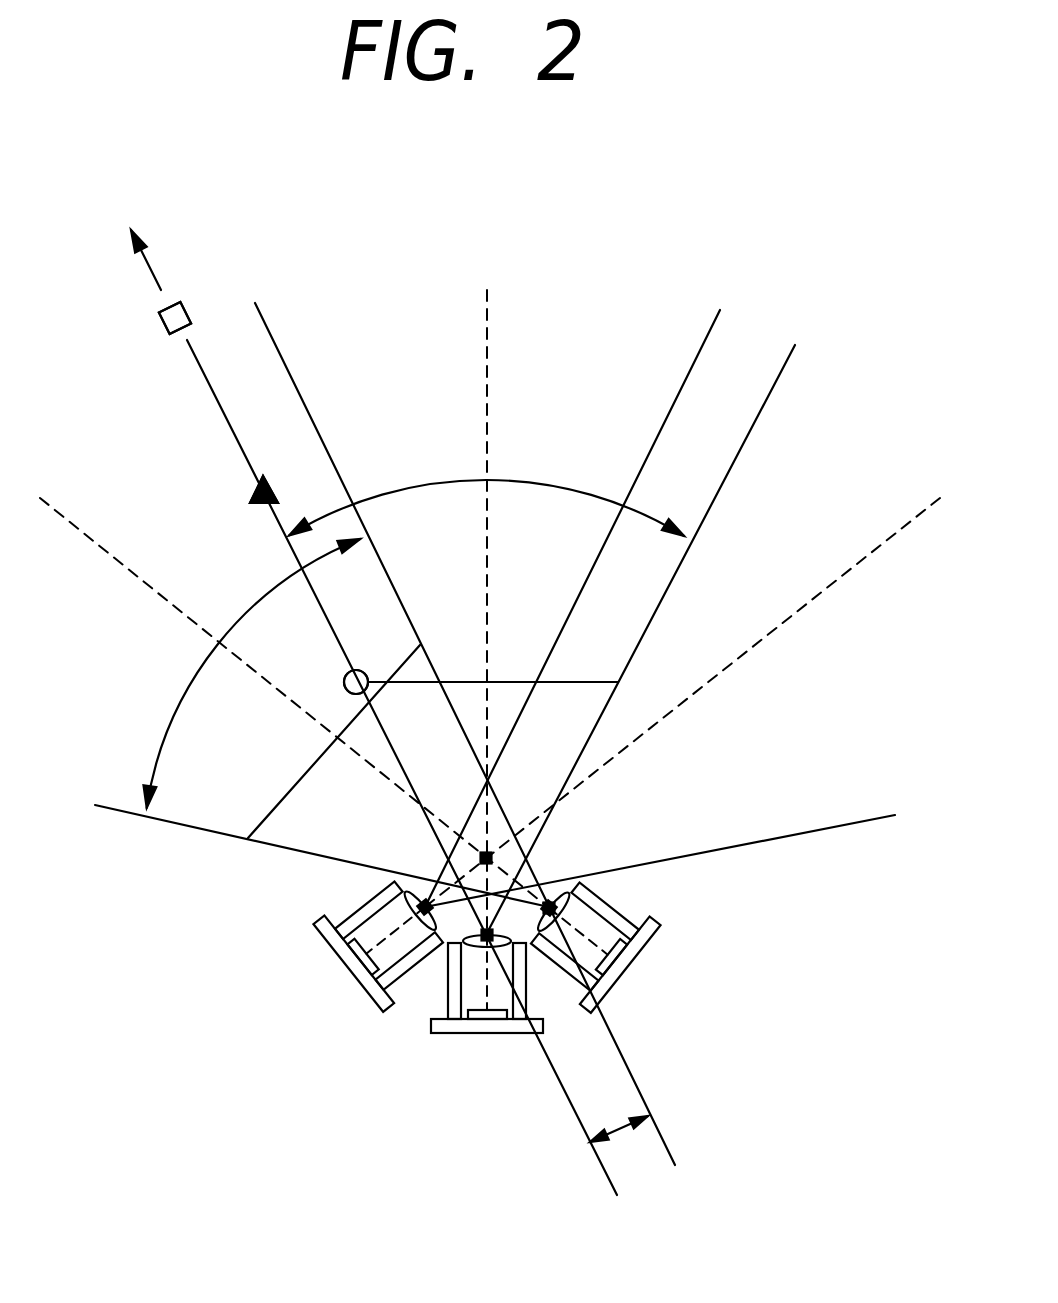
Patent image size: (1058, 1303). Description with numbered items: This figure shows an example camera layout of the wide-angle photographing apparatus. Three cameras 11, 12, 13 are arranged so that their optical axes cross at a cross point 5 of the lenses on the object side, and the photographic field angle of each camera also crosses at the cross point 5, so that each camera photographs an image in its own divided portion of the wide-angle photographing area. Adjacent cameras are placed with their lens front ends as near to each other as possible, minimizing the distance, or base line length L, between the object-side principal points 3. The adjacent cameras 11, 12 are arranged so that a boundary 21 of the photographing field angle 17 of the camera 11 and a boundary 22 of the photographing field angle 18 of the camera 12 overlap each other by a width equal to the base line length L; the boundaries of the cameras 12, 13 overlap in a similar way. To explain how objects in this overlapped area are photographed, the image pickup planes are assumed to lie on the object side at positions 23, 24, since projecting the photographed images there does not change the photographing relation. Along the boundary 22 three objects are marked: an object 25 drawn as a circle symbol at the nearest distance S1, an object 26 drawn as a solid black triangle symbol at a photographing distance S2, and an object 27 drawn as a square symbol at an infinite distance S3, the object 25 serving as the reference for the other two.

The principal point 3 is at (551, 900).
The cross point 5 is at (490, 852).
The camera 11 is at (635, 963).
The camera 12 is at (478, 1035).
The camera 13 is at (338, 960).
The photographing field angle 17 is at (184, 695).
The photographing field angle 18 is at (540, 484).
The boundary 21 is at (285, 360).
The boundary 22 is at (212, 397).
The image pickup plane position 23 is at (280, 798).
The image pickup plane position 24 is at (508, 682).
The object 25 is at (356, 670).
The object 26 is at (275, 487).
The object 27 is at (188, 312).
The nearest distance S1 is at (344, 690).
The photographing distance S2 is at (252, 502).
The infinite distance S3 is at (156, 327).
The base line length L is at (619, 1151).